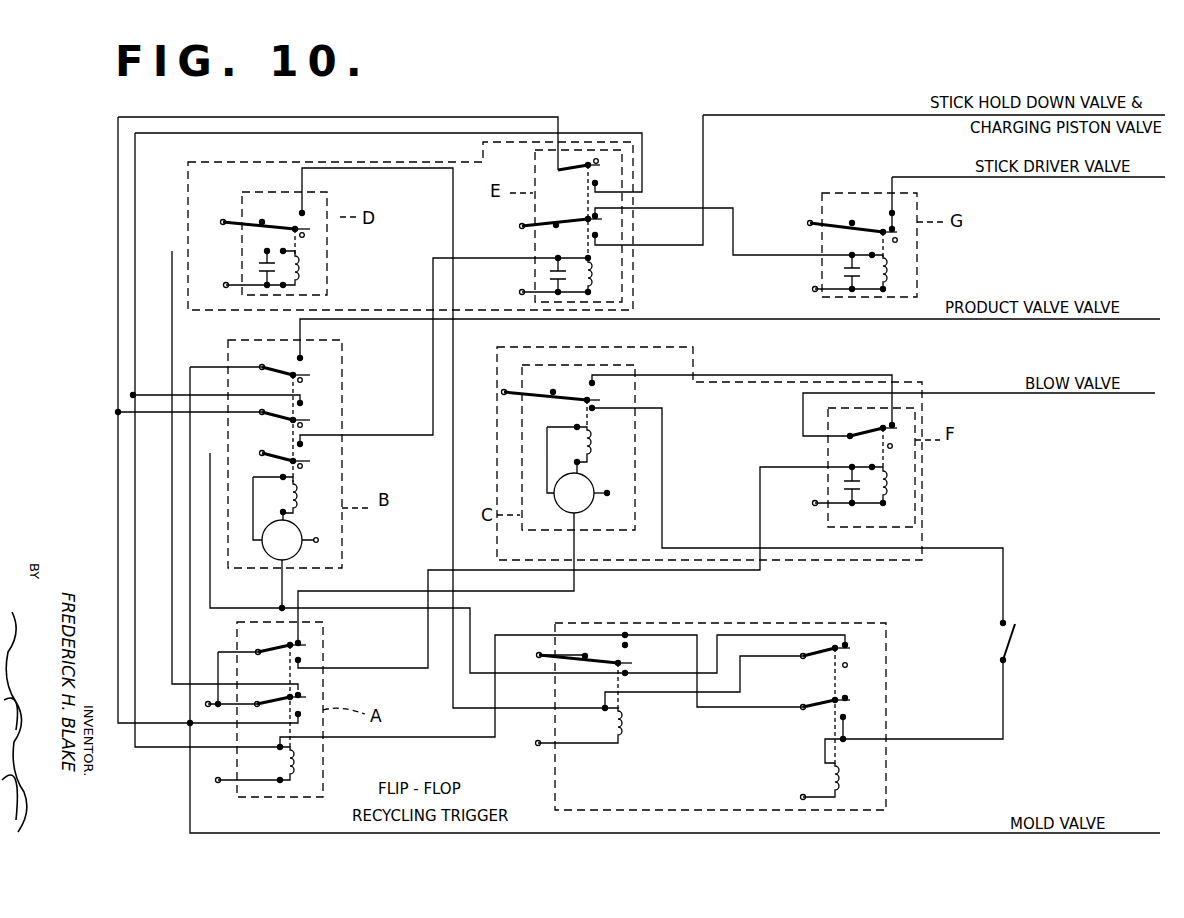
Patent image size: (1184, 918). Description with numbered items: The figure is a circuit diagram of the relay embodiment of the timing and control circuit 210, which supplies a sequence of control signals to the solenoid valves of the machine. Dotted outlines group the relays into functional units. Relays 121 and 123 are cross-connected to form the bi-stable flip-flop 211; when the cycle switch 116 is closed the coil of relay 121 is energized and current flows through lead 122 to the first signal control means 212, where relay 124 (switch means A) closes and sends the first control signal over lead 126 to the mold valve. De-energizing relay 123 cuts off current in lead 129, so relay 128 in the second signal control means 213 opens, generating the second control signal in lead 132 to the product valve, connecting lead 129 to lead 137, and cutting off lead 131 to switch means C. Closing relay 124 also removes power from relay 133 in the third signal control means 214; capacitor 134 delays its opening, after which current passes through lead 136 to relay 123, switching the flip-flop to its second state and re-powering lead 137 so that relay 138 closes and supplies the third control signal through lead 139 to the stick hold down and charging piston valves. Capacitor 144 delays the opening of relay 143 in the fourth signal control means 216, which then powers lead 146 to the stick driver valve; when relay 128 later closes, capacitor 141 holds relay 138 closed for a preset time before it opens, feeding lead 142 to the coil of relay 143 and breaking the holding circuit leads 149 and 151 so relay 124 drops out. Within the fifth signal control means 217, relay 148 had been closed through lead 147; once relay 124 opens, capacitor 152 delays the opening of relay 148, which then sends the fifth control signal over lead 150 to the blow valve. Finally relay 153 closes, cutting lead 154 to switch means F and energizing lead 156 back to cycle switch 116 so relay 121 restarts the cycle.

The timing and control circuit 210 is at (80, 149).
The lead 149 is at (430, 117).
The third signal control means 214 is at (503, 140).
The lead 151 is at (413, 140).
The lead 139 is at (790, 116).
The lead 146 is at (940, 172).
The fourth signal control means 216 is at (862, 193).
The lead 142 is at (755, 255).
The capacitor 144 is at (845, 270).
The relay 143 is at (890, 266).
The lead 132 is at (688, 319).
The capacitor 134 is at (258, 267).
The relay 133 is at (300, 268).
The capacitor 141 is at (550, 274).
The relay 138 is at (592, 278).
The lead 137 is at (433, 373).
The relay 128 is at (300, 488).
The second signal control means 213 is at (342, 540).
The lead 136 is at (453, 530).
The fifth signal control means 217 is at (693, 372).
The lead 154 is at (760, 375).
The lead 150 is at (925, 393).
The relay 153 is at (592, 450).
The capacitor 152 is at (845, 486).
The relay 148 is at (890, 482).
The lead 156 is at (695, 548).
The lead 129 is at (398, 608).
The lead 131 is at (535, 591).
The first signal control means 212 is at (323, 656).
The lead 147 is at (420, 668).
The lead 122 is at (425, 737).
The relay 124 is at (295, 772).
The relay 123 is at (622, 745).
The relay 121 is at (830, 781).
The lead 126 is at (900, 833).
The cycle switch 116 is at (1012, 654).
The flip-flop 211 is at (790, 620).